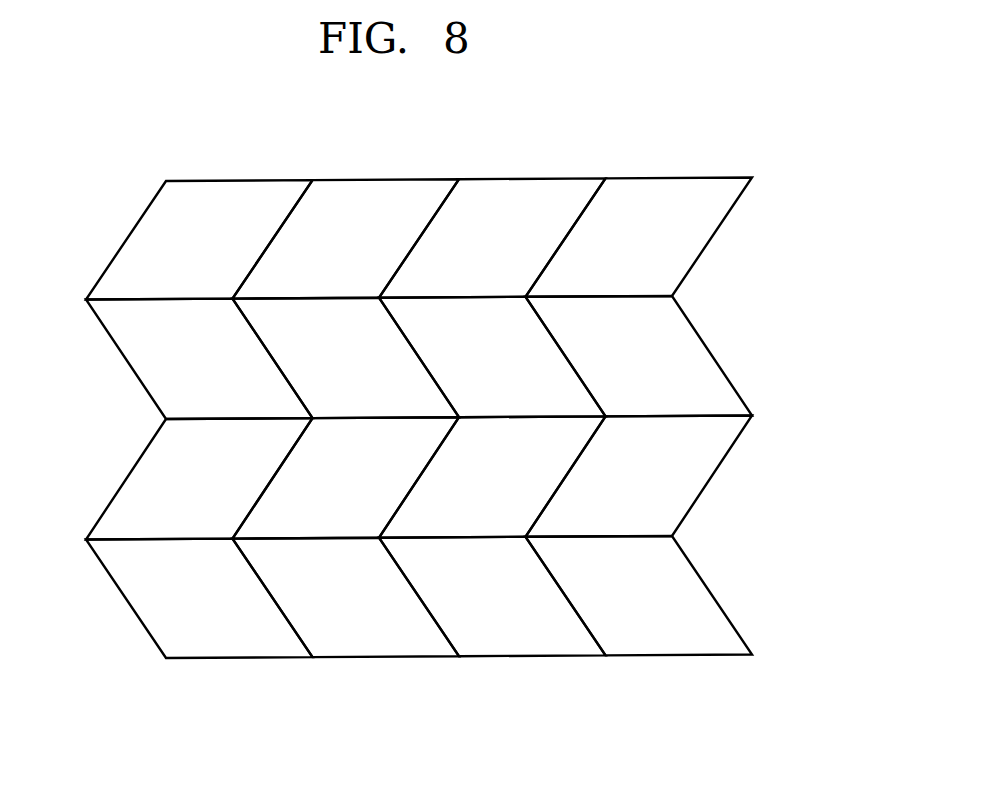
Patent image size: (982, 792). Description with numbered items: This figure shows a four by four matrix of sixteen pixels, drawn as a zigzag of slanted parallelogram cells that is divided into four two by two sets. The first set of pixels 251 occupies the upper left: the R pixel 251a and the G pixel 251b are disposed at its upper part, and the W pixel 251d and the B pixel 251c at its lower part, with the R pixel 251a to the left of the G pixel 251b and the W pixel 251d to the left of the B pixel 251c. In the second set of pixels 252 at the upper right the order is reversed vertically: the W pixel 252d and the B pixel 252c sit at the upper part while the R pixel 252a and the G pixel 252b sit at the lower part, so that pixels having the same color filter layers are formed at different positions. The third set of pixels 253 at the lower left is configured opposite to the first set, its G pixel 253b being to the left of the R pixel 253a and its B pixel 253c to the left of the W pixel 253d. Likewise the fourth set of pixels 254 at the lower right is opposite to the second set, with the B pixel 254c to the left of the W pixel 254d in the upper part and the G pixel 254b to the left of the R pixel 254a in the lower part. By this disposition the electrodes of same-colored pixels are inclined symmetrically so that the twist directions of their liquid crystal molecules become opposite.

The first set of pixels 251 is at (234, 263).
The R pixel 251a is at (232, 196).
The G pixel 251b is at (380, 196).
The B pixel 251c is at (322, 400).
The W pixel 251d is at (133, 338).
The second set of pixels 252 is at (608, 257).
The R pixel 252a is at (548, 397).
The G pixel 252b is at (675, 333).
The B pixel 252c is at (632, 196).
The W pixel 252d is at (483, 196).
The third set of pixels 253 is at (234, 573).
The R pixel 253a is at (322, 458).
The G pixel 253b is at (135, 518).
The B pixel 253c is at (236, 643).
The W pixel 253d is at (385, 641).
The fourth set of pixels 254 is at (608, 576).
The R pixel 254a is at (672, 640).
The G pixel 254b is at (524, 641).
The B pixel 254c is at (557, 456).
The W pixel 254d is at (668, 512).